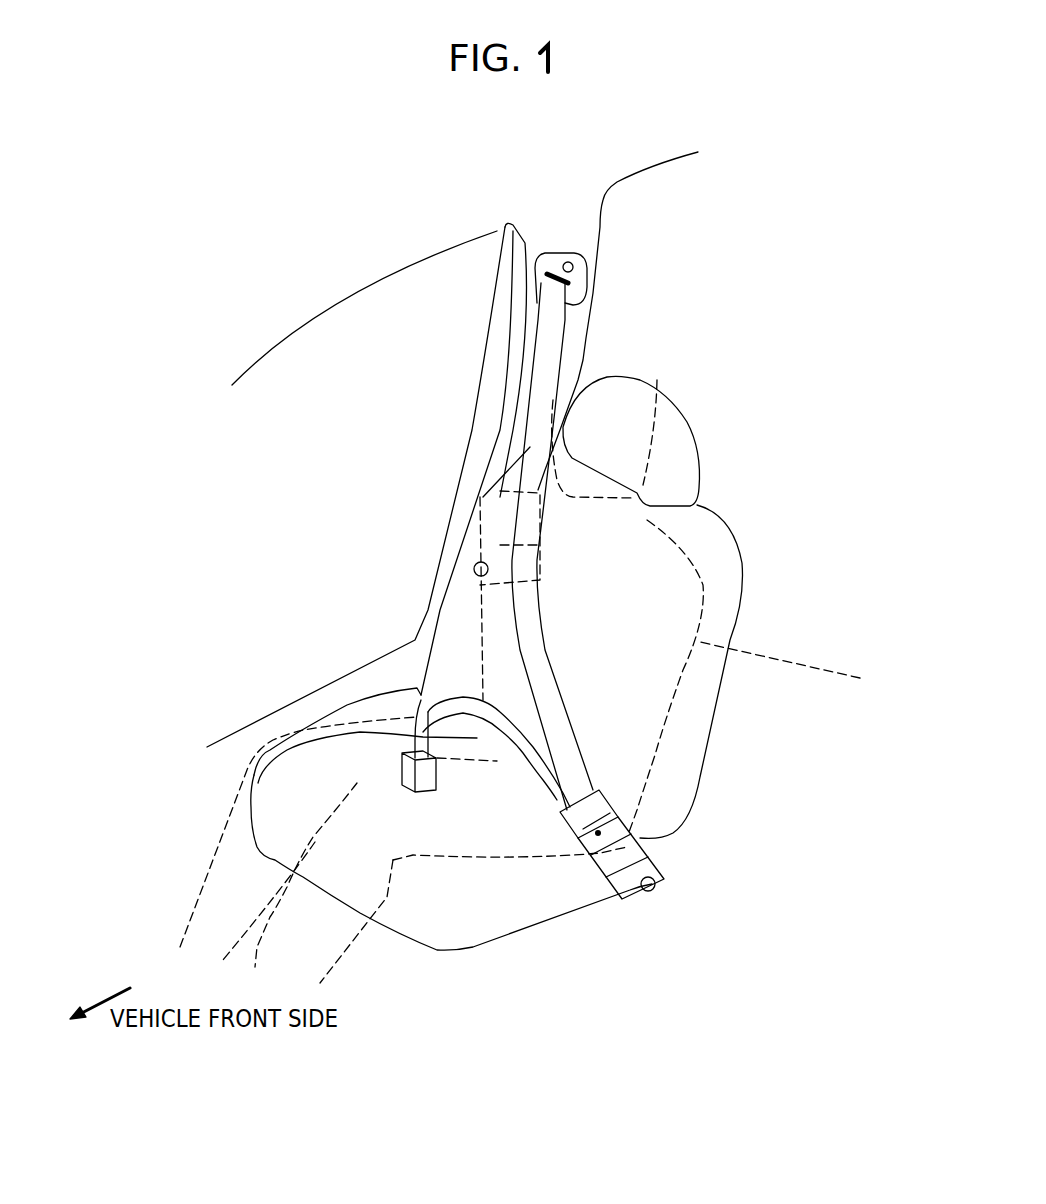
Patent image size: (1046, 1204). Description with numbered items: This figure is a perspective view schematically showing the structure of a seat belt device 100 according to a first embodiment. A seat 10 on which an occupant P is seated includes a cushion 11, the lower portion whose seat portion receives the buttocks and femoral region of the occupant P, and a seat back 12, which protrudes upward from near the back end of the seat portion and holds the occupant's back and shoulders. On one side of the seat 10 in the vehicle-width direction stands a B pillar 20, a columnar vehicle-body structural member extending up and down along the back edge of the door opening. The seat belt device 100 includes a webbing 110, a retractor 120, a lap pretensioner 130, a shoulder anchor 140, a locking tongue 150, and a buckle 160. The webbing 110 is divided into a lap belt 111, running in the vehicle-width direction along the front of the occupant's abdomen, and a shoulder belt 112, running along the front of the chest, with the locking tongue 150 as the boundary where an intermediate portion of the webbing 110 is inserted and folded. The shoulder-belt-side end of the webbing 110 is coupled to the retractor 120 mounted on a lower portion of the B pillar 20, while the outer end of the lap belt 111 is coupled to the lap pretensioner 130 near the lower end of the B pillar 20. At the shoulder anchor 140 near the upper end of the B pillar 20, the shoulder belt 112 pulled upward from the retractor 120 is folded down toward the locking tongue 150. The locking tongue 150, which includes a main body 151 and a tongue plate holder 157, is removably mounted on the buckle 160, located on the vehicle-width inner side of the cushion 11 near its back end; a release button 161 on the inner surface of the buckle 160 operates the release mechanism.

The seat 10 is at (578, 697).
The cushion 11 is at (508, 925).
The seat back 12 is at (727, 603).
The B pillar 20 is at (585, 337).
The occupant P is at (711, 651).
The seat belt device 100 is at (499, 580).
The webbing 110 is at (657, 650).
The lap belt 111 is at (507, 737).
The shoulder belt 112 is at (563, 735).
The retractor 120 is at (473, 566).
The lap pretensioner 130 is at (400, 768).
The shoulder anchor 140 is at (543, 255).
The locking tongue 150 is at (743, 904).
The main body 151 is at (580, 822).
The tongue plate holder 157 is at (613, 842).
The buckle 160 is at (752, 917).
The release button 161 is at (643, 848).